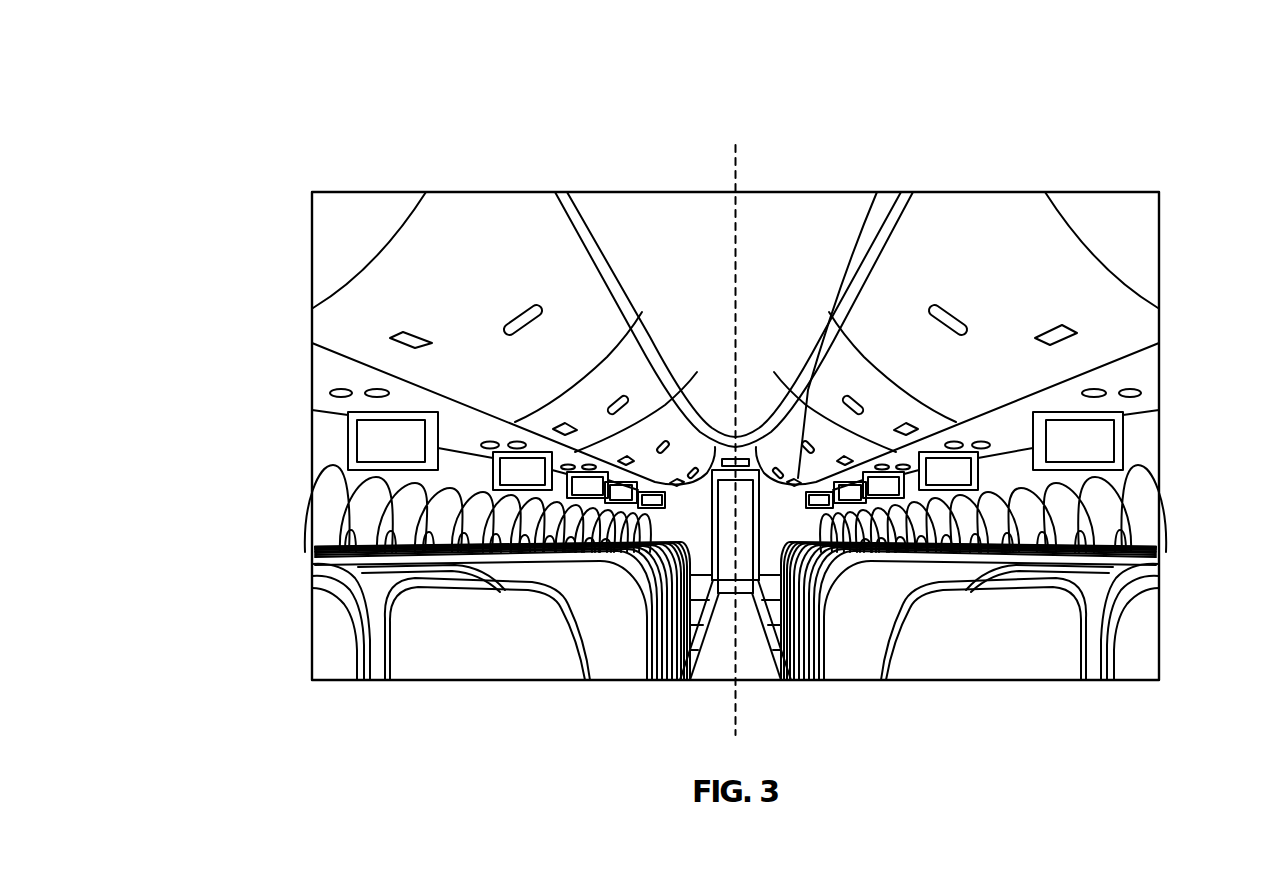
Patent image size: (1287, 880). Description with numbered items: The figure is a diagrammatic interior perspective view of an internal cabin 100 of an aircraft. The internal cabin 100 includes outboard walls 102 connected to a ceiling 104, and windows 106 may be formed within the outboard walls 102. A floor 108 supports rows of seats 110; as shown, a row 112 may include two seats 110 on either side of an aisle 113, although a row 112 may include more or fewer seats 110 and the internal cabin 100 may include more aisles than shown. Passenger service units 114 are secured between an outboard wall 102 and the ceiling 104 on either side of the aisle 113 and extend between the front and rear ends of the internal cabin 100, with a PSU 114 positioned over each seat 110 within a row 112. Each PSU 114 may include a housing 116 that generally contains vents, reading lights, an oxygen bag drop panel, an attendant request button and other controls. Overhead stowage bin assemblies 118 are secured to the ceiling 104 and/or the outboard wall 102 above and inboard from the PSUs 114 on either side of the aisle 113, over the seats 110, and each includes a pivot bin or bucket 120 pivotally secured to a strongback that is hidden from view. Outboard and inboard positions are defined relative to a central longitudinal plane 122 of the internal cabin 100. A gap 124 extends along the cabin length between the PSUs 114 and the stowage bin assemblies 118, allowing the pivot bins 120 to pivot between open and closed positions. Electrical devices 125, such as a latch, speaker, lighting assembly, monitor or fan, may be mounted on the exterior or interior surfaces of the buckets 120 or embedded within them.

The internal cabin 100 is at (262, 148).
The outboard wall 102 is at (324, 441).
The ceiling 104 is at (790, 192).
The window 106 is at (338, 536).
The floor 108 is at (725, 665).
The seat 110 is at (481, 668).
The row 112 is at (320, 642).
The aisle 113 is at (757, 665).
The passenger service unit 114 is at (348, 414).
The housing 116 is at (338, 393).
The overhead stowage bin assembly 118 is at (420, 243).
The pivot bin or bucket 120 is at (487, 208).
The central longitudinal plane 122 is at (733, 163).
The gap 124 is at (312, 344).
The electrical device 125 is at (400, 333).